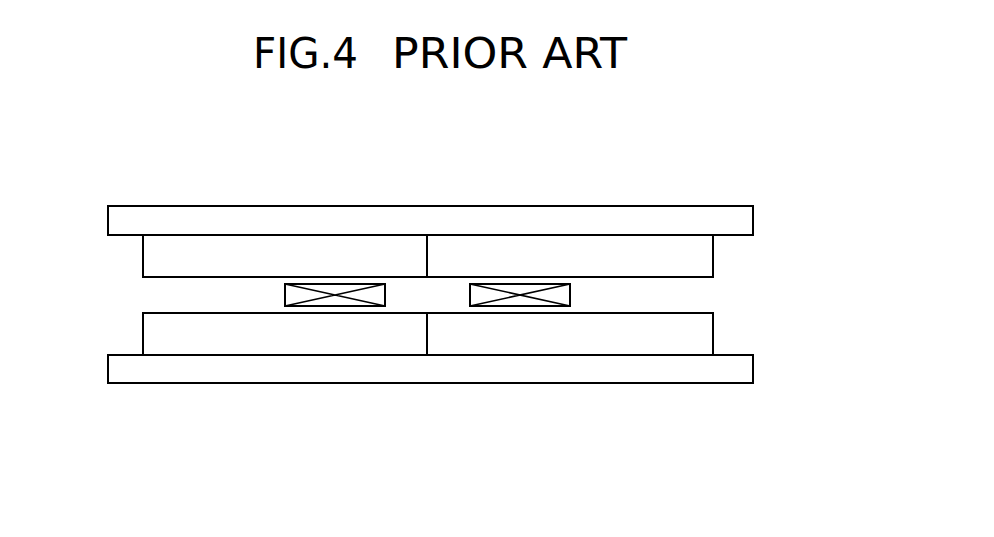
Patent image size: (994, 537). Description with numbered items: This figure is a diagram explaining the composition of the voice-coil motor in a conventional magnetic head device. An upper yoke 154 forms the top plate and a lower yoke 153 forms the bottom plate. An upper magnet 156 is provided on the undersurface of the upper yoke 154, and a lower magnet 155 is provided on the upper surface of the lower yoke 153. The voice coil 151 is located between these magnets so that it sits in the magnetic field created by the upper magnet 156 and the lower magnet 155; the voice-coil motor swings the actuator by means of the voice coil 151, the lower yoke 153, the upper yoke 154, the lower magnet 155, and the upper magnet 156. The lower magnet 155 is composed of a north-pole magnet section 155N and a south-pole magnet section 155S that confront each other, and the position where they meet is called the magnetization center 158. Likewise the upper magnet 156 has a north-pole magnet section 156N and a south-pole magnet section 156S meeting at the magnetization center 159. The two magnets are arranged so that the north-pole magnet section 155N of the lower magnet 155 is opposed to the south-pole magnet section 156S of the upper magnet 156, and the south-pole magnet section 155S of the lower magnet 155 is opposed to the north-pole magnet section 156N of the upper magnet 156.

The voice coil 151 is at (355, 283).
The lower yoke 153 is at (683, 383).
The upper yoke 154 is at (685, 206).
The lower magnet 155 is at (721, 333).
The north-pole magnet section 155N is at (480, 350).
The south-pole magnet section 155S is at (195, 350).
The upper magnet 156 is at (721, 259).
The north-pole magnet section 156N is at (195, 243).
The south-pole magnet section 156S is at (480, 243).
The magnetization center 158 is at (425, 334).
The magnetization center 159 is at (428, 257).